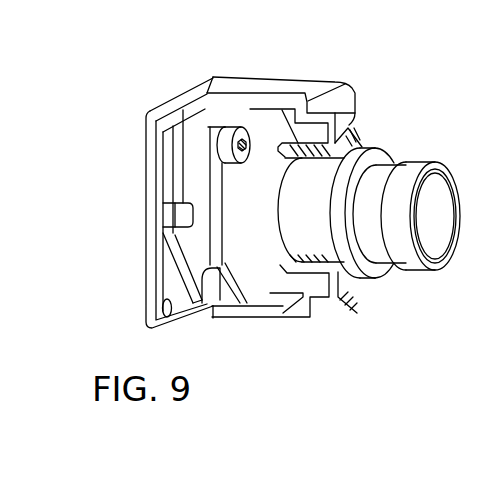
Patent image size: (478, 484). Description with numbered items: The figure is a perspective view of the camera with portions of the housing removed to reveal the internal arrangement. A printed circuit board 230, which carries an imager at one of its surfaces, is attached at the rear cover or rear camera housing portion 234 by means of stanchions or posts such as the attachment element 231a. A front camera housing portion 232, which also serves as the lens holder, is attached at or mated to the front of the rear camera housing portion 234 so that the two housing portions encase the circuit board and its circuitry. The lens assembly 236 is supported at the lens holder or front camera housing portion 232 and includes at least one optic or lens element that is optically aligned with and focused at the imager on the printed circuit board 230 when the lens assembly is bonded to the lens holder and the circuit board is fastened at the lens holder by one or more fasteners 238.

The printed circuit board 230 is at (247, 280).
The attachment element 231a is at (202, 142).
The front camera housing portion 232 is at (298, 93).
The rear camera housing portion 234 is at (155, 237).
The lens assembly 236 is at (385, 218).
The fastener 238 is at (136, 243).